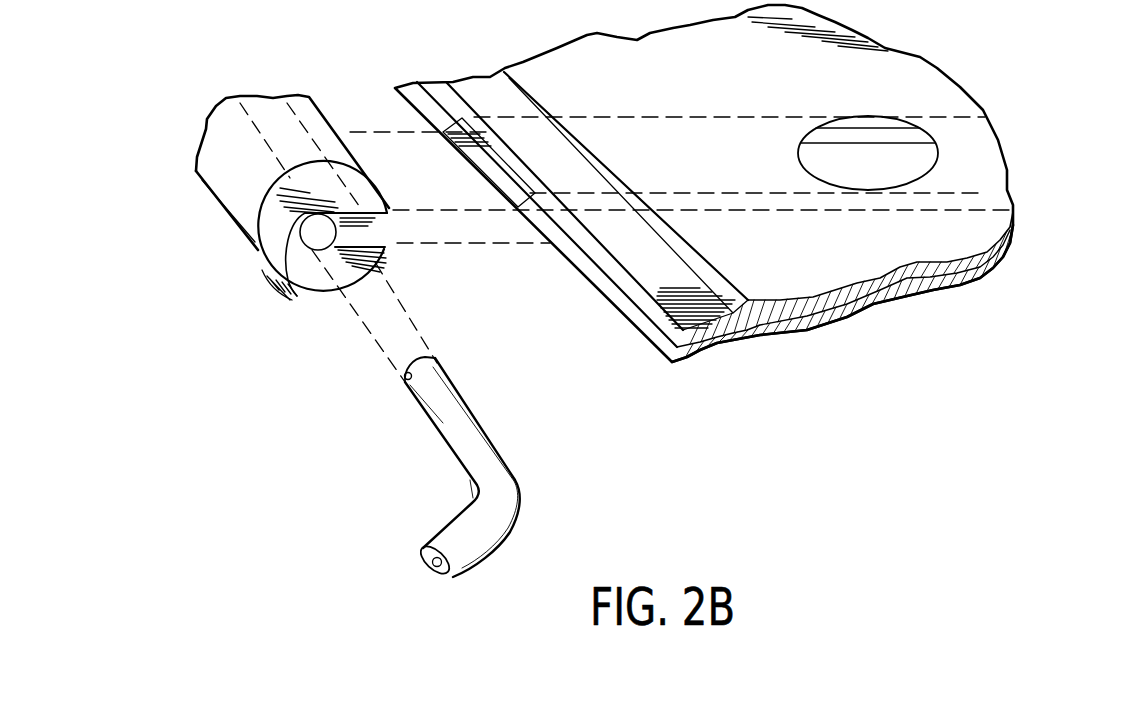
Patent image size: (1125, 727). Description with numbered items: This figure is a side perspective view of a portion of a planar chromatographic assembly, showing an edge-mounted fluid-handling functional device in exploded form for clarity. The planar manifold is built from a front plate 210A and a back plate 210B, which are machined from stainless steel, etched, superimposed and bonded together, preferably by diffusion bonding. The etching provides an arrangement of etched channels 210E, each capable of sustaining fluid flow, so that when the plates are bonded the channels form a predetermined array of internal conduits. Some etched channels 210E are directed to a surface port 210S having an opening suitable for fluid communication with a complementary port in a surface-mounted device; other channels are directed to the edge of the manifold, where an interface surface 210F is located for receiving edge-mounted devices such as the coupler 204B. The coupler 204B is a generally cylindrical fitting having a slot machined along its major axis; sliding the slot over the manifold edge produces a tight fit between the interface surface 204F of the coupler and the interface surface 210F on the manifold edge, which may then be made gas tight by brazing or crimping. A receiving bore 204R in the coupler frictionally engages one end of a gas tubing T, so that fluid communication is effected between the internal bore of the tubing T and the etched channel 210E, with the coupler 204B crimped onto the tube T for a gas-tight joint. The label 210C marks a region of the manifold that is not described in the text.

The coupler 204B is at (222, 220).
The interface surface 204F is at (397, 250).
The receiving bore 204R is at (288, 285).
The gas tubing T is at (493, 430).
The front plate 210A is at (772, 310).
The back plate 210B is at (693, 349).
The center portion 210C is at (628, 84).
The etched channels 210E is at (468, 152).
The interface surface 210F is at (600, 178).
The surface port 210S is at (924, 88).